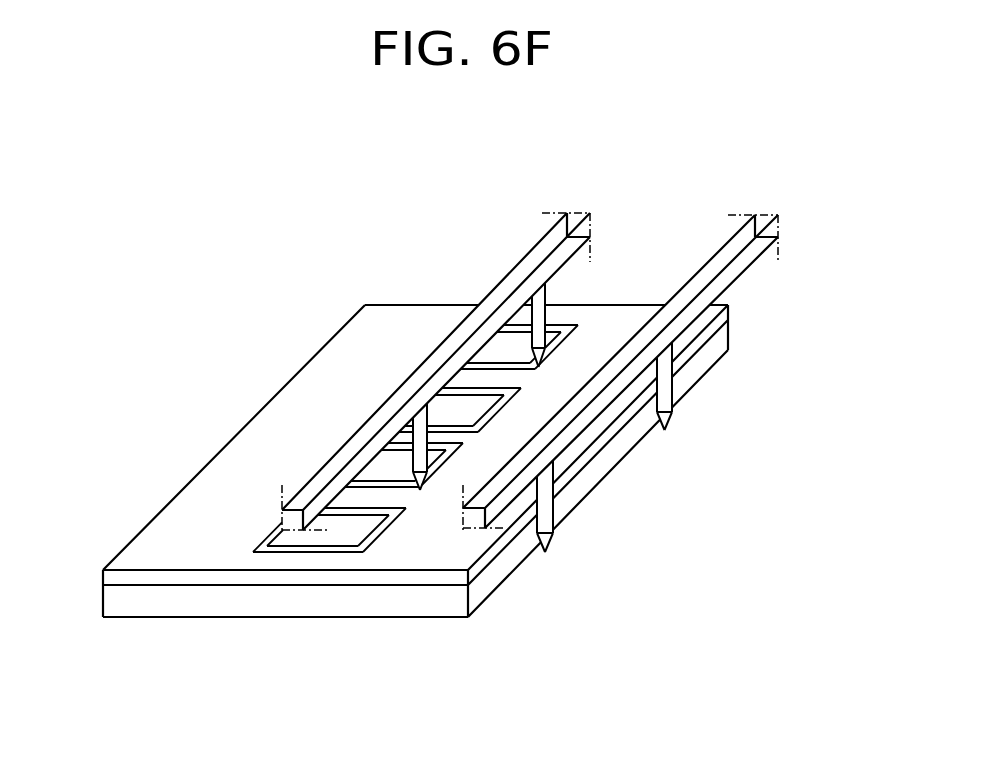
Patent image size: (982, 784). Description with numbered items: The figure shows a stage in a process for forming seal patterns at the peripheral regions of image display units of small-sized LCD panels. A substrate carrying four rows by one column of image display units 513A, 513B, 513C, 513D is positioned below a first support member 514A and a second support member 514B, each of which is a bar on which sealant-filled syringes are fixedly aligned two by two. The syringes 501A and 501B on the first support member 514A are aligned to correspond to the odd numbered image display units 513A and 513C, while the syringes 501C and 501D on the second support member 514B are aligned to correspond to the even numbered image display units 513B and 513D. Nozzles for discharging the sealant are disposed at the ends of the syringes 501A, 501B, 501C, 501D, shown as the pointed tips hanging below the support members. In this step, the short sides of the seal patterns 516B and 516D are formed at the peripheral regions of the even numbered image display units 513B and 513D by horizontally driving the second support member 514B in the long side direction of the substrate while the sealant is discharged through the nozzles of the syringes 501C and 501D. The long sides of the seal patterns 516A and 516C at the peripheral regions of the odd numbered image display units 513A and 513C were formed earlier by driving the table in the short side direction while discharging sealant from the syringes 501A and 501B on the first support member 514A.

The syringe 501A is at (548, 517).
The syringe 501B is at (668, 397).
The syringe 501C is at (413, 430).
The syringe 501D is at (538, 292).
The image display unit 513A is at (290, 538).
The image display unit 513B is at (360, 475).
The image display unit 513C is at (450, 394).
The image display unit 513D is at (438, 357).
The first support member 514A is at (738, 267).
The second support member 514B is at (543, 243).
The seal pattern 516A is at (280, 558).
The seal pattern 516B is at (400, 447).
The seal pattern 516C is at (480, 386).
The seal pattern 516D is at (503, 320).